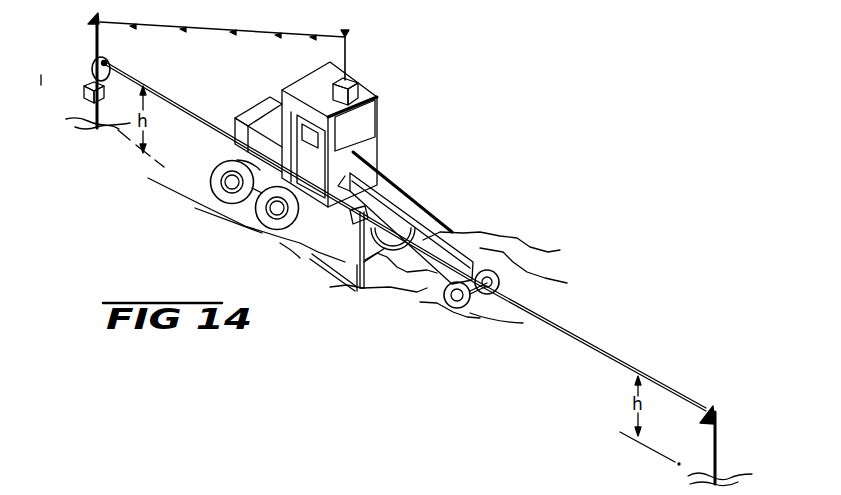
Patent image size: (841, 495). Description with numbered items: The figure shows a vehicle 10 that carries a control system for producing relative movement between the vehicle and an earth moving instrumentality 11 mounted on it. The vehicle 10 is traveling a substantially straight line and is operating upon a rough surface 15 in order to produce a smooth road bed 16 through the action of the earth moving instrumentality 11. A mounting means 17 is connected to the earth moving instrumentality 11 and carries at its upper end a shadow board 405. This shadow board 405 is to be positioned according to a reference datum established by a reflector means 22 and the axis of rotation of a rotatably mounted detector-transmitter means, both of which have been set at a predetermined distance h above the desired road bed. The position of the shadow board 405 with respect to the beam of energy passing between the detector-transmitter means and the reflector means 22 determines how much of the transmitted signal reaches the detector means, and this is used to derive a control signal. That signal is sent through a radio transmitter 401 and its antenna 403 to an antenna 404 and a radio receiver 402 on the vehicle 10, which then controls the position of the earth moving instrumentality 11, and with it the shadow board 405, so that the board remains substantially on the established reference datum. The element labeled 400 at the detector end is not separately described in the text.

The vehicle 10 is at (427, 133).
The earth moving instrumentality 11 is at (345, 290).
The rough surface 15 is at (510, 336).
The smooth road bed 16 is at (277, 248).
The mounting means 17 is at (333, 268).
The reflector means 22 is at (716, 406).
The sensor 400 is at (110, 60).
The radio transmitter 401 is at (85, 85).
The radio receiver 402 is at (358, 84).
The antenna 403 is at (96, 42).
The antenna 404 is at (351, 39).
The shadow board 405 is at (352, 224).